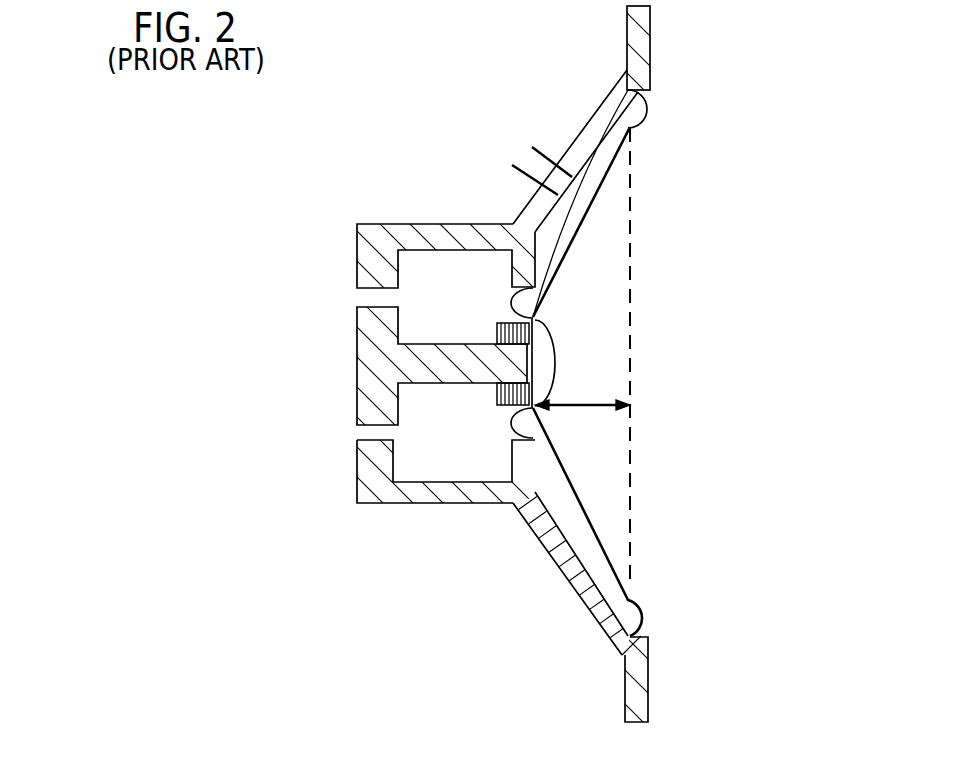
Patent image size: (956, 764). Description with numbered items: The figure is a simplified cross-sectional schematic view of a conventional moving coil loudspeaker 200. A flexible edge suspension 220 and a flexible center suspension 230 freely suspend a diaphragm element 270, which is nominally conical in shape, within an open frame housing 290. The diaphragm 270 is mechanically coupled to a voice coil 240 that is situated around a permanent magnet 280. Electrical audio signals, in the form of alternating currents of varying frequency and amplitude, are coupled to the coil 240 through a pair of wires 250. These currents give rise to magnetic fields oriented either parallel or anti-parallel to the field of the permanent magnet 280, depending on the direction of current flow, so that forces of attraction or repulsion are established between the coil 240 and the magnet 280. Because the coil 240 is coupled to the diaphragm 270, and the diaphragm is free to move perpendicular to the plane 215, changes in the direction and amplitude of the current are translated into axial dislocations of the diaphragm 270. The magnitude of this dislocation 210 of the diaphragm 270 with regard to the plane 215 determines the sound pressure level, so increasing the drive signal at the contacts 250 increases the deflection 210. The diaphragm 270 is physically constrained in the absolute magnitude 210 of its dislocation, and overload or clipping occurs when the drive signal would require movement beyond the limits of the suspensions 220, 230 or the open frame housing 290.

The prior art loudspeaker 200 is at (205, 216).
The dislocation 210 is at (631, 362).
The plane 215 is at (633, 442).
The flexible edge suspension 220 is at (650, 107).
The flexible center suspension 230 is at (513, 420).
The voice coil 240 is at (497, 404).
The pair of wires 250 is at (500, 146).
The diaphragm element 270 is at (607, 186).
The permanent magnet 280 is at (355, 363).
The open frame housing 290 is at (575, 587).